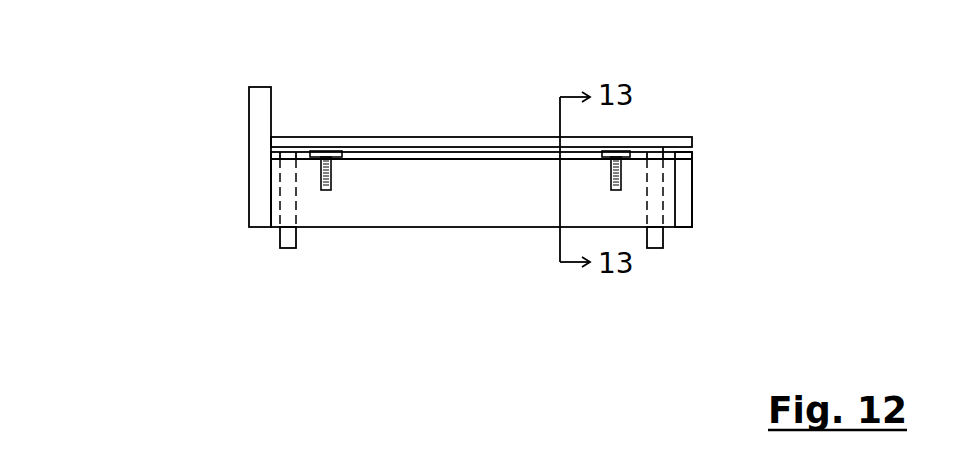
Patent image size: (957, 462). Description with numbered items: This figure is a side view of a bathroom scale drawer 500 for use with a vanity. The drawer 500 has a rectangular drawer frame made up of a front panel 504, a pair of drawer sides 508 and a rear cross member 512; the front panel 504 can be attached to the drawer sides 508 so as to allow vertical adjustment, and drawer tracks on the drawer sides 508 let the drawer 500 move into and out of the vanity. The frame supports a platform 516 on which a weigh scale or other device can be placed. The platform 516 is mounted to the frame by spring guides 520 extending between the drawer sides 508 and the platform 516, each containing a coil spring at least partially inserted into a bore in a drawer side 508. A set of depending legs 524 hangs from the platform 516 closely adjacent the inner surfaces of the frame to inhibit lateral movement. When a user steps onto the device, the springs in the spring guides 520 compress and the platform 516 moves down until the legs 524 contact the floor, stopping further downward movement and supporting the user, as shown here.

The drawer 500 is at (220, 77).
The front panel 504 is at (257, 167).
The drawer sides 508 is at (430, 203).
The rear cross member 512 is at (683, 190).
The platform 516 is at (358, 137).
The spring guides 520 is at (327, 200).
The depending legs 524 is at (283, 235).